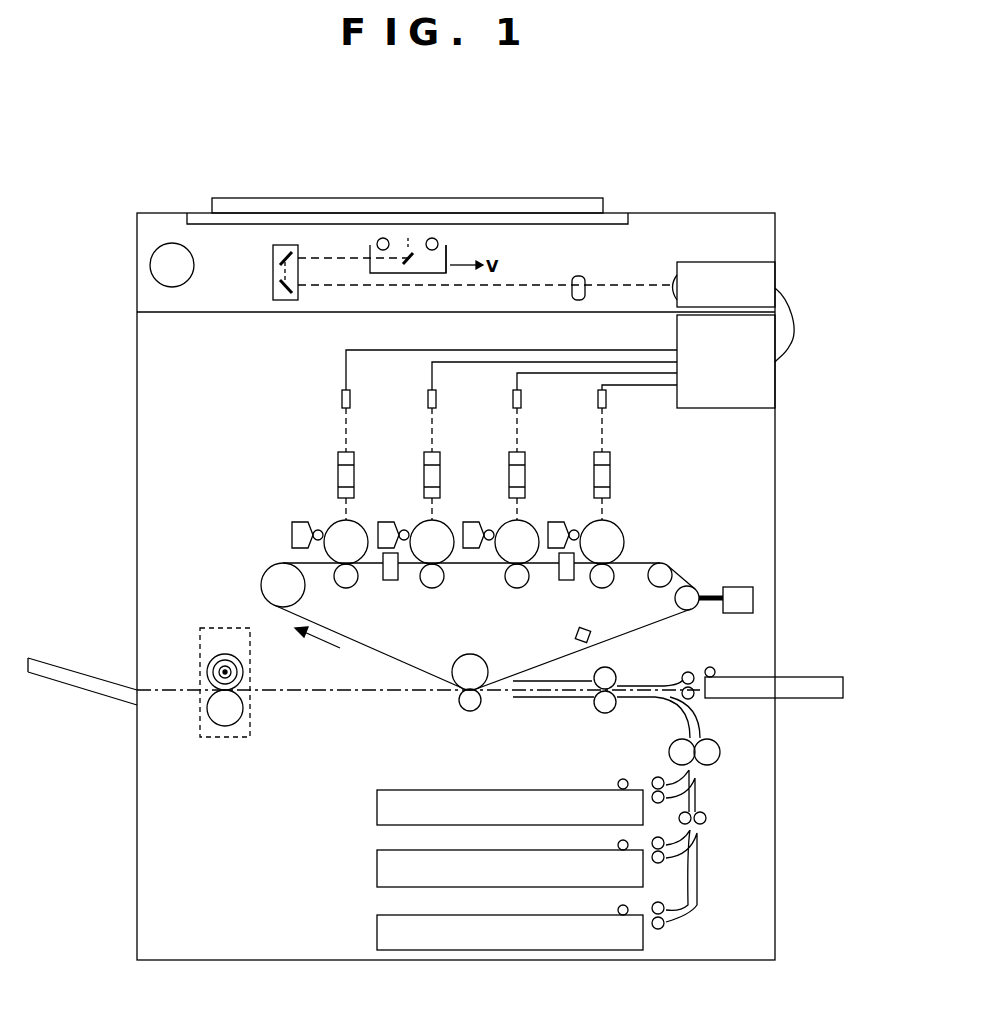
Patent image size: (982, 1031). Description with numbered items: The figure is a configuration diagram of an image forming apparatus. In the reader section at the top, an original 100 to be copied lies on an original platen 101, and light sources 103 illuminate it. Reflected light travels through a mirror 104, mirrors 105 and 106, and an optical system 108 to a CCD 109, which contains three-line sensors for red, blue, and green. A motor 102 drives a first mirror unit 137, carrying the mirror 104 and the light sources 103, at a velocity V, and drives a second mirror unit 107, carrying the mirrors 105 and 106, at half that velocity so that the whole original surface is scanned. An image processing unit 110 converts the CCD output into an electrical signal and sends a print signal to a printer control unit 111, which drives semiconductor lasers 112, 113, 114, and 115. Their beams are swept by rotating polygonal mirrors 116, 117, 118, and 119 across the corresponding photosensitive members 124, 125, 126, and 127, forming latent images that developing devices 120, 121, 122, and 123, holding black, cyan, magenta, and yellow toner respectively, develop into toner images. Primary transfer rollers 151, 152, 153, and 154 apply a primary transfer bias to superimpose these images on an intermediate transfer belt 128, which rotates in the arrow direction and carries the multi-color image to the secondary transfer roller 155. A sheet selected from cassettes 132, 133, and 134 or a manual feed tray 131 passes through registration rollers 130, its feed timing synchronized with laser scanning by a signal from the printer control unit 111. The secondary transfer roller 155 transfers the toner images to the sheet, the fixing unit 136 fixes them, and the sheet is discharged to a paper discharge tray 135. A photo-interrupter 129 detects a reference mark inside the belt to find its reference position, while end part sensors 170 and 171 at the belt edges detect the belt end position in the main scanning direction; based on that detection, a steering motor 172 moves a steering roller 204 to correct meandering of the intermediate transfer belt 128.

The original 100 is at (560, 198).
The original platen 101 is at (640, 197).
The motor 102 is at (172, 243).
The light sources 103 is at (385, 238).
The mirror 104 is at (410, 265).
The mirror 105 is at (280, 257).
The mirror 106 is at (278, 286).
The second mirror unit 107 is at (298, 270).
The optical system 108 is at (578, 276).
The CCD 109 is at (672, 285).
The image processing unit 110 is at (720, 262).
The printer control unit 111 is at (775, 380).
The semiconductor laser 112 is at (598, 399).
The semiconductor laser 113 is at (513, 399).
The semiconductor laser 114 is at (428, 399).
The semiconductor laser 115 is at (342, 399).
The polygonal mirror 116 is at (610, 470).
The polygonal mirror 117 is at (525, 470).
The polygonal mirror 118 is at (440, 470).
The polygonal mirror 119 is at (354, 470).
The developing device 120 is at (556, 522).
The developing device 121 is at (470, 522).
The developing device 122 is at (386, 522).
The developing device 123 is at (300, 522).
The photosensitive member 124 is at (596, 520).
The photosensitive member 125 is at (511, 520).
The photosensitive member 126 is at (426, 520).
The photosensitive member 127 is at (340, 520).
The intermediate transfer belt 128 is at (375, 652).
The photo-interrupter 129 is at (575, 638).
The registration rollers 130 is at (620, 696).
The manual feed tray 131 is at (735, 677).
The cassette 132 is at (377, 800).
The cassette 133 is at (377, 862).
The cassette 134 is at (377, 925).
The paper discharge tray 135 is at (85, 675).
The fixing unit 136 is at (220, 628).
The first mirror unit 137 is at (446, 245).
The primary transfer roller 151 is at (350, 588).
The primary transfer roller 152 is at (435, 588).
The primary transfer roller 153 is at (520, 588).
The primary transfer roller 154 is at (610, 586).
The secondary transfer roller 155 is at (460, 705).
The end part sensor 170 is at (390, 580).
The end part sensor 171 is at (566, 580).
The steering motor 172 is at (738, 587).
The steering roller 204 is at (687, 586).